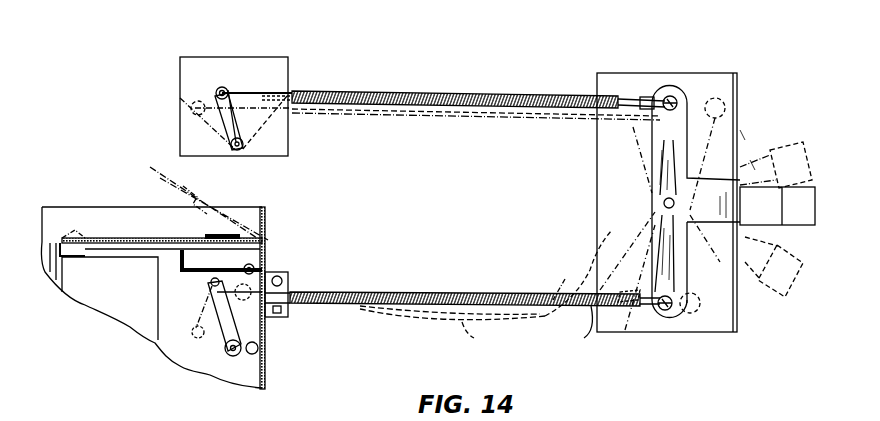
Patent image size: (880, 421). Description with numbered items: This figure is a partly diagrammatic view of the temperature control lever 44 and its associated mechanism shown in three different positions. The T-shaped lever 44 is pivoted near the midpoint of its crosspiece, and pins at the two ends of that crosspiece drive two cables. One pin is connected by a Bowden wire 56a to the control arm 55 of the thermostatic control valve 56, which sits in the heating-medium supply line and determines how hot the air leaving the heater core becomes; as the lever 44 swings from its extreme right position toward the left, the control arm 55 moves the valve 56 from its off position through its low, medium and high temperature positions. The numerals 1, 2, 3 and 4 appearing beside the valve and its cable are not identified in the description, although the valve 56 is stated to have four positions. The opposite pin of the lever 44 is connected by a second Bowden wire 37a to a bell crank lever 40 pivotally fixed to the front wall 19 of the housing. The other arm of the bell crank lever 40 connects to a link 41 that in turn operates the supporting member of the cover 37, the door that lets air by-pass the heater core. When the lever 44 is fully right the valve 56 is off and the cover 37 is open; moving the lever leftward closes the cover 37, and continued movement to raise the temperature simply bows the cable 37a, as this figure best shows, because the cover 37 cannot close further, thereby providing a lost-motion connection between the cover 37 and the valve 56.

The thermostatic control valve 56 is at (273, 63).
The control arm 55 is at (216, 124).
The pivot pin 2 is at (531, 86).
The link arm 3 is at (240, 104).
The connecting pin 4 is at (579, 118).
The Bowden wire 56a is at (427, 92).
The rod path line 1 is at (523, 118).
The temperature control lever 44 is at (748, 190).
The Bowden wire 37a is at (391, 292).
The cover 37 is at (153, 236).
The link 41 is at (207, 367).
The bell crank lever 40 is at (264, 342).
The front wall 19 is at (264, 380).